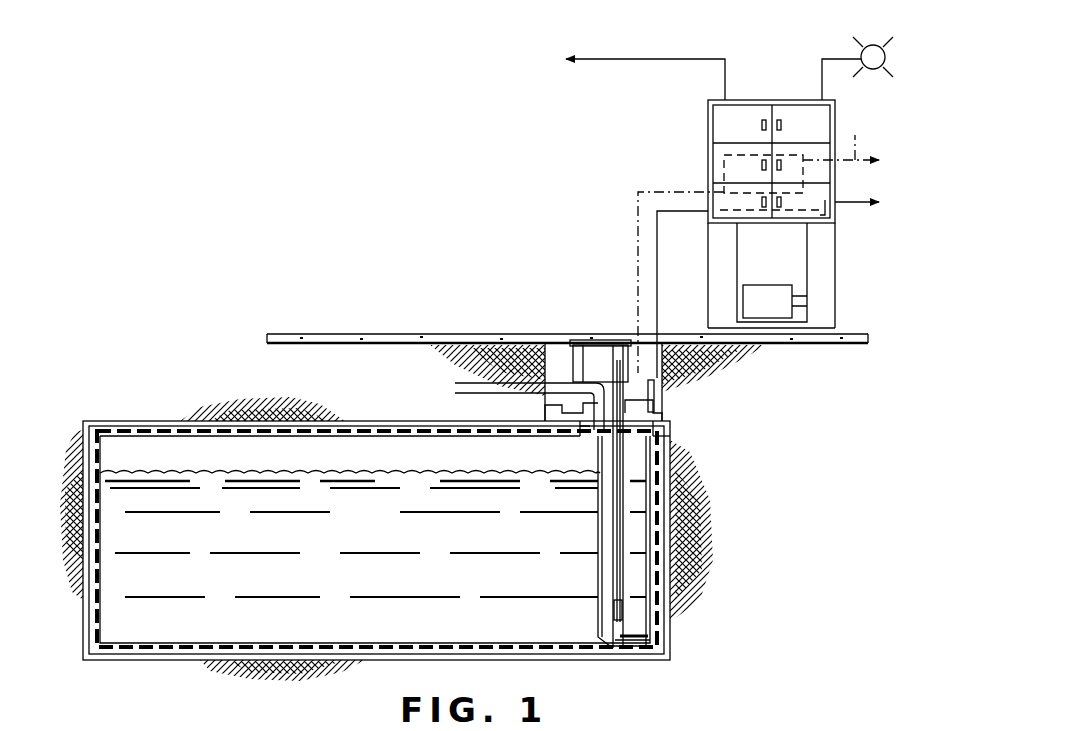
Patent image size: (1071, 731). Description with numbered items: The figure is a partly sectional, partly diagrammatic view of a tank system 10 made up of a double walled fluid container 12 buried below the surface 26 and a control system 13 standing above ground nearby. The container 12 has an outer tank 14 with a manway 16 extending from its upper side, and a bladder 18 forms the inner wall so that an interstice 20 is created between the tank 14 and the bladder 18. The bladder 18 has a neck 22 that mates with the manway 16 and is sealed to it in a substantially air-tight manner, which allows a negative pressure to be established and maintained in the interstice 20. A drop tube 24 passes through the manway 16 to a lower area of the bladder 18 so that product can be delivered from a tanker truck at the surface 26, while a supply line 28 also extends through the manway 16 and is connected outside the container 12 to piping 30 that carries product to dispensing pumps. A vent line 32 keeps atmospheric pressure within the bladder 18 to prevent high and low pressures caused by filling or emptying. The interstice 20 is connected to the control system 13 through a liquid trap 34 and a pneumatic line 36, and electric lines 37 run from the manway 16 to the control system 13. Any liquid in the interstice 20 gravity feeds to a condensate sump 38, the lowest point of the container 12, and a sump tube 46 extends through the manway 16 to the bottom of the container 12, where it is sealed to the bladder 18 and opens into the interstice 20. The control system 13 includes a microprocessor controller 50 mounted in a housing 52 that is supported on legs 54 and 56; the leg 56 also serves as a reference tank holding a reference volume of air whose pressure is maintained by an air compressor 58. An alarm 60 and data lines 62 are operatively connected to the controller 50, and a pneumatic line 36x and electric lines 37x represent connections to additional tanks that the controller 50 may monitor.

The tank system 10 is at (432, 280).
The double walled fluid container 12 is at (88, 421).
The control system 13 is at (688, 118).
The outer tank 14 is at (375, 421).
The manway 16 is at (550, 416).
The bladder 18 is at (178, 436).
The interstice 20 is at (155, 432).
The neck 22 is at (583, 435).
The drop tube 24 is at (600, 525).
The surface 26 is at (338, 334).
The supply line 28 is at (617, 575).
The piping 30 is at (483, 382).
The vent line 32 is at (457, 393).
The liquid trap 34 is at (655, 393).
The pneumatic line 36 is at (672, 265).
The pneumatic line 36x is at (851, 202).
The electric lines 37 is at (636, 235).
The electric lines 37x is at (855, 135).
The condensate sump 38 is at (640, 648).
The sump tube 46 is at (620, 512).
The microprocessor controller 50 is at (724, 170).
The housing 52 is at (748, 105).
The leg 54 is at (727, 275).
The leg 56 is at (836, 272).
The air compressor 58 is at (762, 294).
The alarm 60 is at (868, 42).
The data lines 62 is at (645, 56).